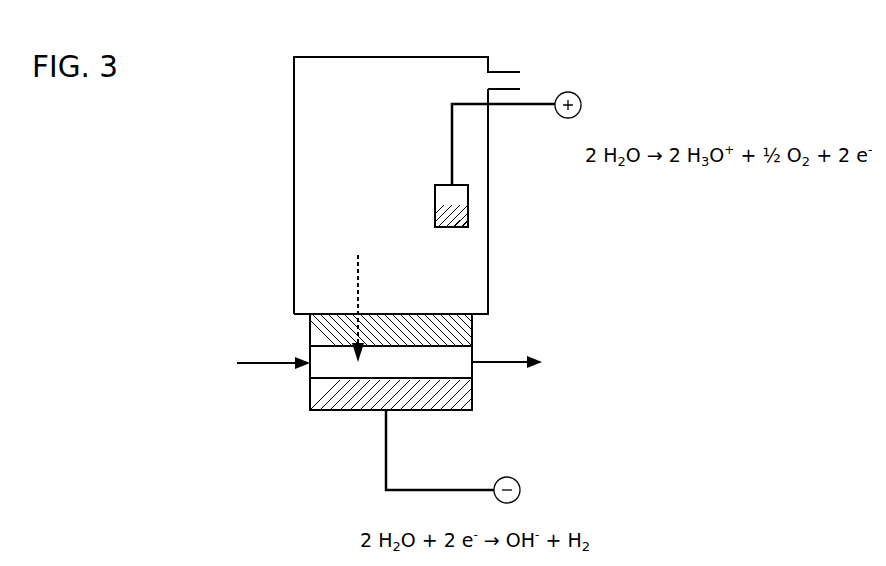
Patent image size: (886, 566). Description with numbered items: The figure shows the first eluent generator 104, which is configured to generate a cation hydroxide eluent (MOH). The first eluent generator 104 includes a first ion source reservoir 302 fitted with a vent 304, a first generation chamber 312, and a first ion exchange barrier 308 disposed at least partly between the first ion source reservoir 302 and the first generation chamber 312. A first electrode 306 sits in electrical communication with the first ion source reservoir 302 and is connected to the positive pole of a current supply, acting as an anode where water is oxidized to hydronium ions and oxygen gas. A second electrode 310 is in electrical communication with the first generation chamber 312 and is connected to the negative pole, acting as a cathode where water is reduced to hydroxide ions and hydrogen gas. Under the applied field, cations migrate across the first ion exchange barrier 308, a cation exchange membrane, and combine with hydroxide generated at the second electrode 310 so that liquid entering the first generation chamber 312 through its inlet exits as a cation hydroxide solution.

The first eluent generator 104 is at (680, 42).
The first ion source reservoir 302 is at (294, 186).
The vent 304 is at (502, 72).
The first electrode 306 is at (468, 198).
The first ion exchange barrier 308 is at (473, 330).
The second electrode 310 is at (473, 403).
The first generation chamber 312 is at (322, 372).